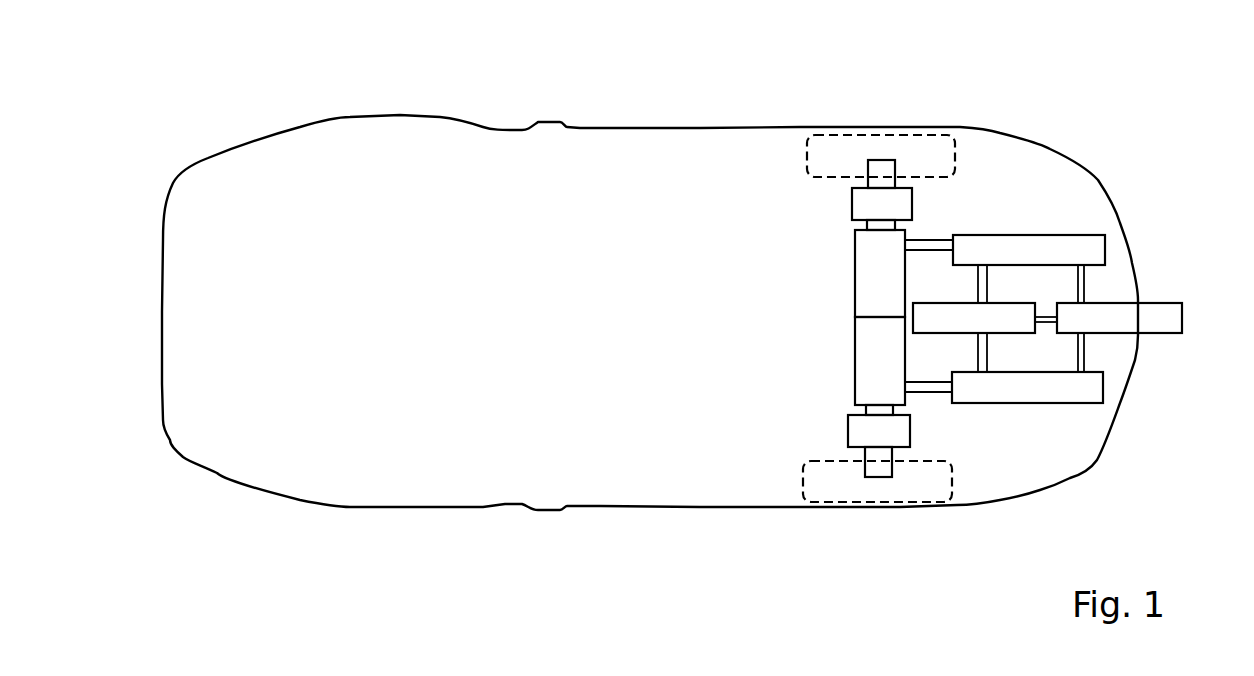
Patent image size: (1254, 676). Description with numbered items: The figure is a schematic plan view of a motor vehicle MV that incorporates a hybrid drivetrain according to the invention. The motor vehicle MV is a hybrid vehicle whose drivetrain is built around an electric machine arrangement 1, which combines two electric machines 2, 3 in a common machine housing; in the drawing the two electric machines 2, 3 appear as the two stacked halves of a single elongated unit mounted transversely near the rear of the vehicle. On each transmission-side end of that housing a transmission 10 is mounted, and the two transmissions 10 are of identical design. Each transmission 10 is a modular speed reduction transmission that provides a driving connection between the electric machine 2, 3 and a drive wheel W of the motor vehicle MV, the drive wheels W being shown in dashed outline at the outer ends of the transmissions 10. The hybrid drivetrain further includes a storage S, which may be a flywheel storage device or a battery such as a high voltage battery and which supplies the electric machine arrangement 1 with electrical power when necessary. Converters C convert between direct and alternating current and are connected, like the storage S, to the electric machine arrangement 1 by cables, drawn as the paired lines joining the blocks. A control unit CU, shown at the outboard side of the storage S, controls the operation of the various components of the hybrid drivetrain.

The motor vehicle MV is at (243, 98).
The drive wheel W is at (955, 153).
The electric machine arrangement 1 is at (832, 318).
The electric machine 2 is at (850, 278).
The electric machine 3 is at (850, 368).
The transmission 10 is at (852, 207).
The converter C is at (1028, 235).
The storage S is at (925, 333).
The control unit CU is at (1182, 318).